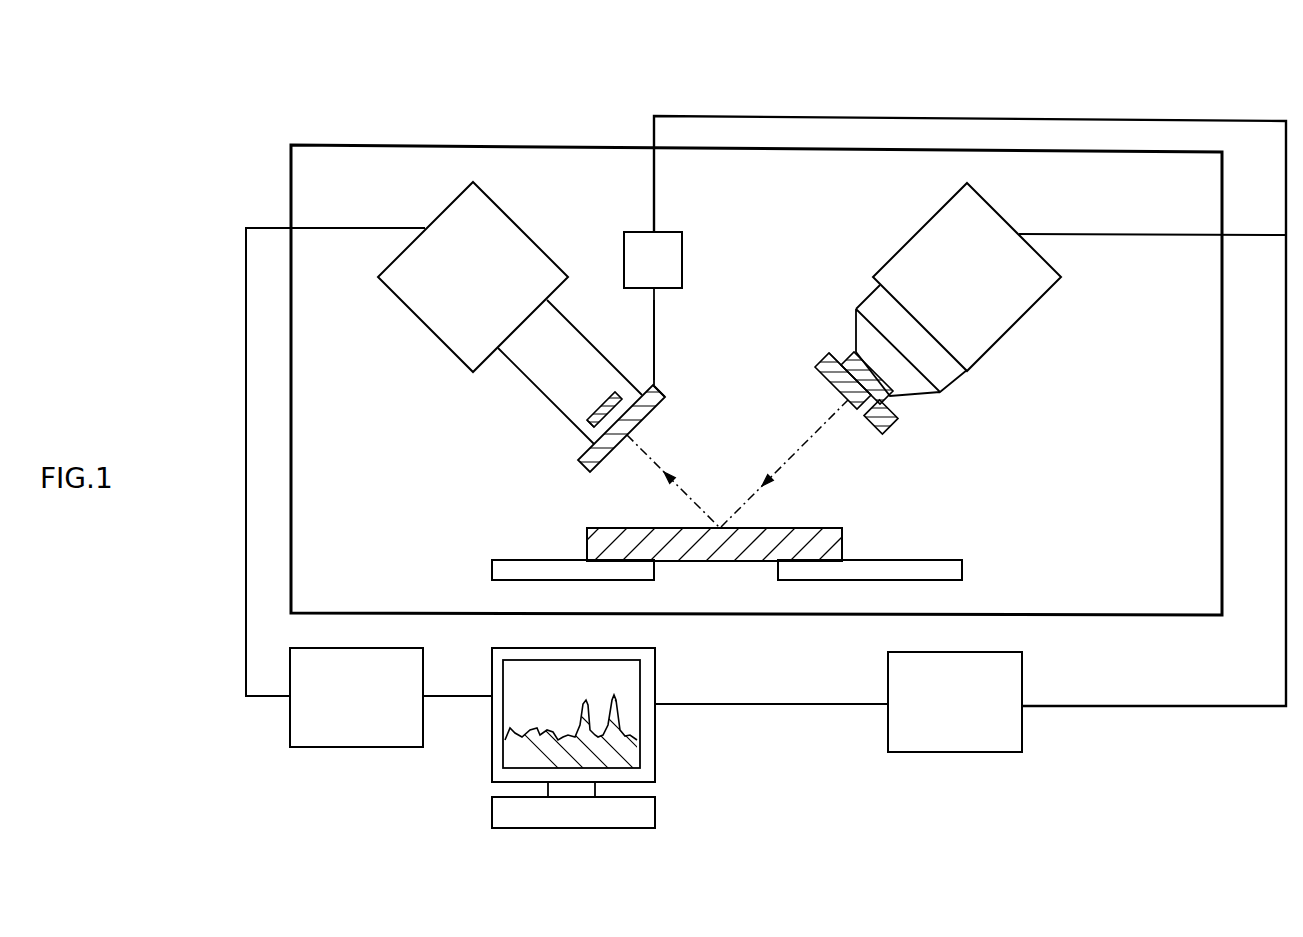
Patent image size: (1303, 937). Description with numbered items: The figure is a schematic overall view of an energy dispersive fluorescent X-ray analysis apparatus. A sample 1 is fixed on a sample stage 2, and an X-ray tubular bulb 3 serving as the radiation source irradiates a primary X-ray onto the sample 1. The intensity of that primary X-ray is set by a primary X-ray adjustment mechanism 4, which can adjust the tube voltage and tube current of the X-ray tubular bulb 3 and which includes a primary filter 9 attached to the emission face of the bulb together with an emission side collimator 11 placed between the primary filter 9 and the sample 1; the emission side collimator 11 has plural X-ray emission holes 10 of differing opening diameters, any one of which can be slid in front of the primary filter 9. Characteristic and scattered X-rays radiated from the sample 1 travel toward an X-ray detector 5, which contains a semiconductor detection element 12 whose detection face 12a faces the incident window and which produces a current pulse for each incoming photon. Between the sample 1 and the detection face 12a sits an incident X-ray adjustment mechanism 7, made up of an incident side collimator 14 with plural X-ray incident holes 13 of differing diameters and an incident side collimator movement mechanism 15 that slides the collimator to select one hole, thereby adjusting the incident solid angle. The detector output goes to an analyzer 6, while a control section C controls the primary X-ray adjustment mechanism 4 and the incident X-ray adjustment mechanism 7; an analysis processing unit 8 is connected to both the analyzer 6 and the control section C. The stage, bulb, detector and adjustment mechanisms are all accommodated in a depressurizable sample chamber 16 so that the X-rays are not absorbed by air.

The sample 1 is at (795, 528).
The sample stage 2 is at (945, 560).
The X-ray tubular bulb 3 is at (1005, 338).
The primary X-ray adjustment mechanism 4 is at (839, 343).
The X-ray detector 5 is at (430, 323).
The analyzer 6 is at (355, 748).
The incident X-ray adjustment mechanism 7 is at (660, 350).
The analysis processing unit 8 is at (655, 812).
The primary filter 9 is at (893, 403).
The X-ray emission holes 10 is at (868, 438).
The emission side collimator 11 is at (823, 367).
The semiconductor detection element 12 is at (590, 403).
The detection face 12a is at (586, 421).
The X-ray incident holes 13 is at (618, 438).
The incident side collimator 14 is at (664, 388).
The incident side collimator movement mechanism 15 is at (682, 256).
The sample chamber 16 is at (530, 146).
The control section C is at (958, 753).